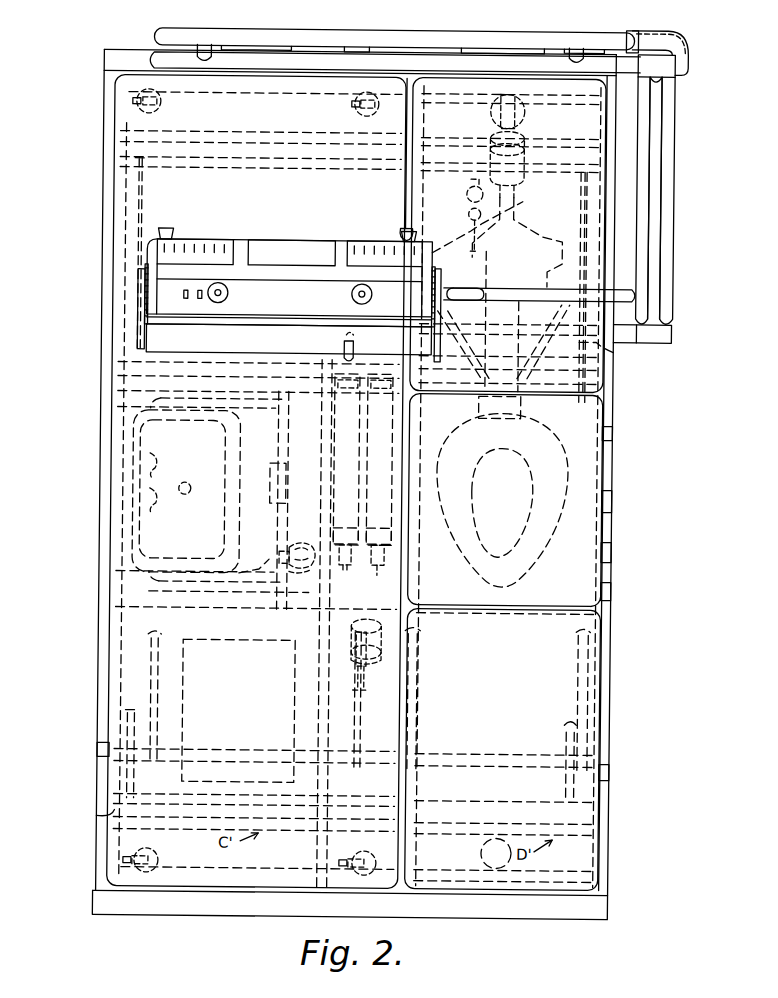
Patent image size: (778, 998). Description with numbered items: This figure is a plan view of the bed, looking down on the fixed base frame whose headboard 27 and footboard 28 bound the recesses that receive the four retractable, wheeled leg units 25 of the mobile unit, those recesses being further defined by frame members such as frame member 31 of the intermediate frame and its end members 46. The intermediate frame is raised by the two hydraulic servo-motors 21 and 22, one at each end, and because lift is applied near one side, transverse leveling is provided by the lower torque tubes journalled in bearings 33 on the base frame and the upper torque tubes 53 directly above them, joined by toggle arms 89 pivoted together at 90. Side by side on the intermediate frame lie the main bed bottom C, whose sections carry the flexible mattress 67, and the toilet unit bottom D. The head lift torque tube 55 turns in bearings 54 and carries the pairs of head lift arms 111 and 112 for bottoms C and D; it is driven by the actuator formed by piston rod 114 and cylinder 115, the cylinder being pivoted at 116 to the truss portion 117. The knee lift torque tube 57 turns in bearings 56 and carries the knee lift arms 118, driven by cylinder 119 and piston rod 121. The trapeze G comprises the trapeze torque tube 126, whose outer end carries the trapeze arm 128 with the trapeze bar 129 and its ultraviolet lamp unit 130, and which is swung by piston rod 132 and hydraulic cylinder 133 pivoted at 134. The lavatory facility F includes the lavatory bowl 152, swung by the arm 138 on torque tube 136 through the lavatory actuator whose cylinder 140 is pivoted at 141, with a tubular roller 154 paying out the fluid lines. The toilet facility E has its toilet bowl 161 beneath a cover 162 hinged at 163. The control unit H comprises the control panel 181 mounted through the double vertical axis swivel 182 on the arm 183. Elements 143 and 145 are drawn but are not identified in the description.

The headboard 27 is at (100, 63).
The footboard 28 is at (612, 905).
The flexible mattress 67 is at (208, 894).
The trapeze bar 129 is at (402, 33).
The ultraviolet lamp unit 130 is at (348, 31).
The trapeze arm 128 is at (666, 145).
The main bed bottom C is at (262, 893).
The toilet unit bottom D is at (496, 893).
The upper torque tubes 53 is at (226, 168).
The knee lift torque tube 57 is at (508, 755).
The bearings 54 is at (112, 340).
The frame member 31 is at (205, 833).
The bearings 33 is at (100, 818).
The end member 46 is at (540, 104).
The retractable leg units 25 is at (158, 106).
The hydraulic servo-motor 21 is at (488, 110).
The toggle linkage arms 89 is at (141, 198).
The toggle pivot 90 is at (568, 722).
The control unit H is at (276, 235).
The control panel 181 is at (250, 240).
The head lift arms 111 is at (140, 262).
The head lift torque tube 55 is at (252, 364).
The trapeze torque tube 126 is at (424, 342).
The piston rod 114 is at (340, 346).
The piston rod 132 is at (356, 334).
The arm 183 is at (630, 286).
The double vertical axis swivel 182 is at (452, 301).
The trapeze G is at (674, 289).
The head lift arms 112 is at (412, 232).
The lavatory facility F is at (240, 545).
The tubular roller 154 is at (252, 470).
The sink support 145 is at (244, 404).
The support rail 143 is at (296, 402).
The torque tube 136 is at (280, 464).
The cylinder 115 is at (334, 436).
The pivot 141 is at (330, 536).
The arm 138 is at (280, 553).
The lavatory bowl 152 is at (240, 570).
The cylinder 140 is at (288, 570).
The hydraulic cylinder 133 is at (386, 521).
The pivot 134 is at (386, 553).
The pivot 116 is at (346, 566).
The truss portion 117 is at (332, 602).
The toilet facility E is at (560, 543).
The toilet bowl 161 is at (492, 583).
The hinge 163 is at (610, 505).
The cover 162 is at (612, 553).
The bearings 56 is at (100, 746).
The cylinder 119 is at (378, 632).
The piston rod 121 is at (386, 685).
The knee lift arms 118 is at (155, 684).
The hydraulic servo-motor 22 is at (485, 853).